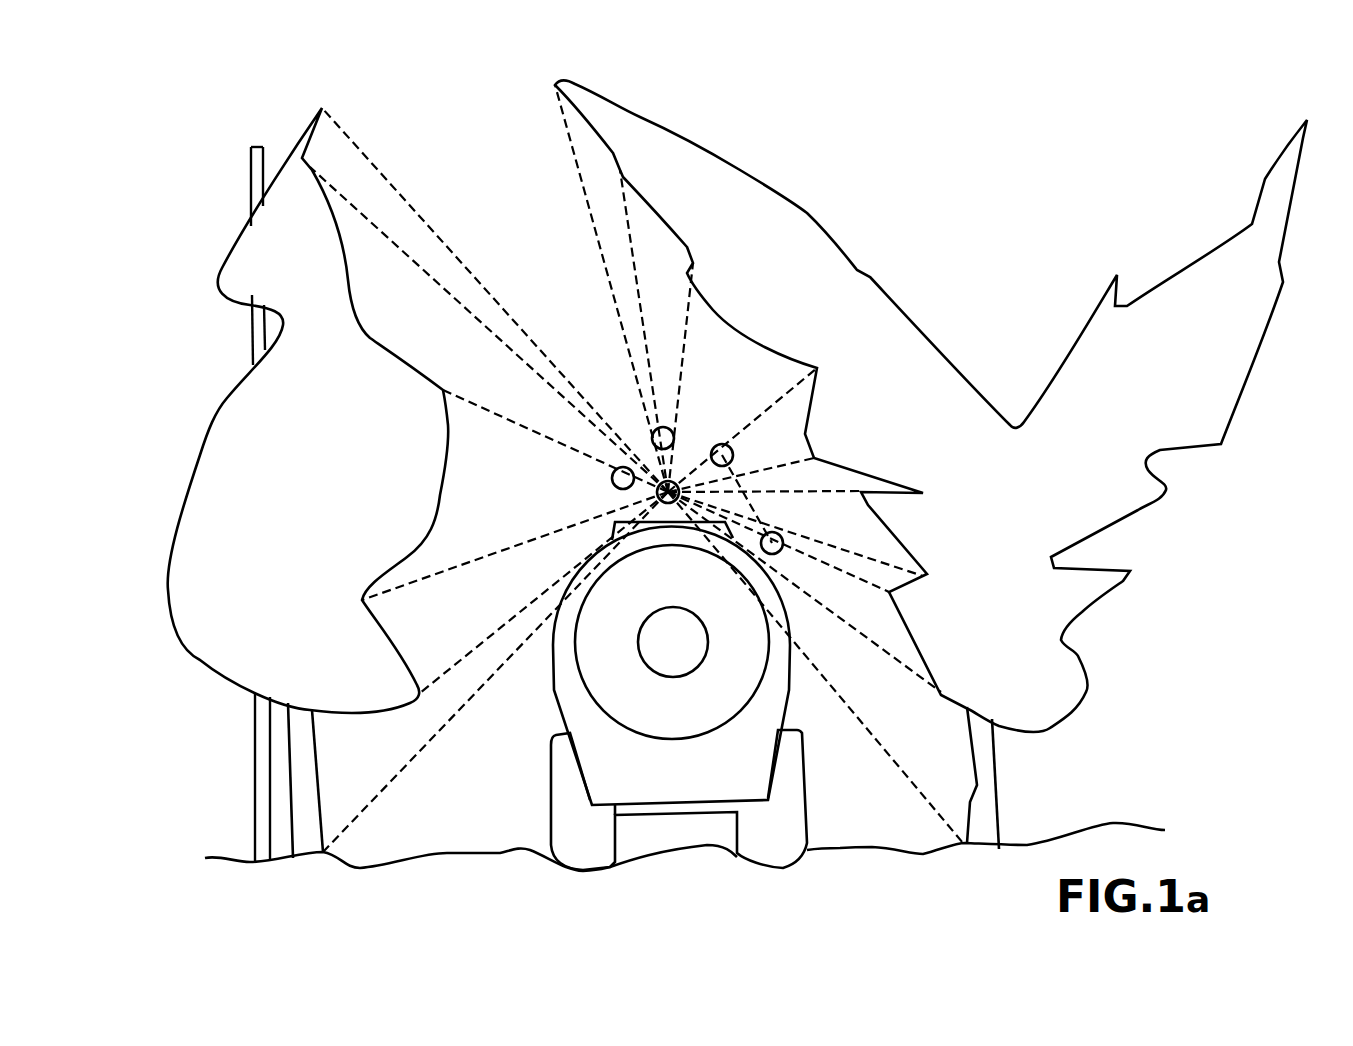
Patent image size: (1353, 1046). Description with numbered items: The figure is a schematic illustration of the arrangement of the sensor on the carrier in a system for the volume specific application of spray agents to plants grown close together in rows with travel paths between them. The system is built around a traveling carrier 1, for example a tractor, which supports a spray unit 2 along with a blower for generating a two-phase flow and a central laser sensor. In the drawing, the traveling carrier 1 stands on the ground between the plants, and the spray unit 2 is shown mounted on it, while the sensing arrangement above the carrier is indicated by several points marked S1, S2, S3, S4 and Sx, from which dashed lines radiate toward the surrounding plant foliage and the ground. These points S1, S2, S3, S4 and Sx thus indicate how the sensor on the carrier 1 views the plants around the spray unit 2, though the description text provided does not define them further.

The traveling carrier 1 is at (535, 782).
The spray unit 2 is at (595, 658).
The sensor position S1 is at (679, 492).
The sensor position S2 is at (612, 478).
The sensor position S3 is at (652, 438).
The sensor position S4 is at (733, 452).
The sensor position Sx is at (775, 532).